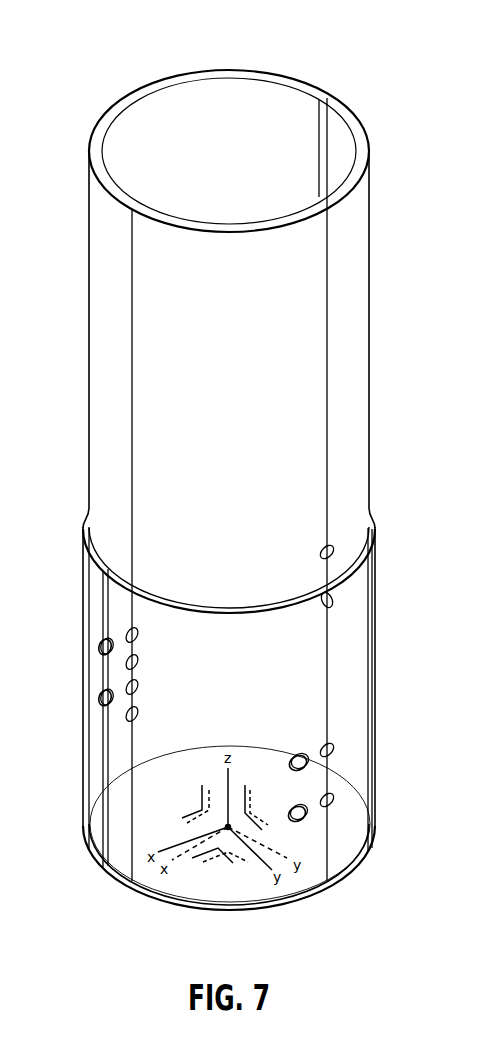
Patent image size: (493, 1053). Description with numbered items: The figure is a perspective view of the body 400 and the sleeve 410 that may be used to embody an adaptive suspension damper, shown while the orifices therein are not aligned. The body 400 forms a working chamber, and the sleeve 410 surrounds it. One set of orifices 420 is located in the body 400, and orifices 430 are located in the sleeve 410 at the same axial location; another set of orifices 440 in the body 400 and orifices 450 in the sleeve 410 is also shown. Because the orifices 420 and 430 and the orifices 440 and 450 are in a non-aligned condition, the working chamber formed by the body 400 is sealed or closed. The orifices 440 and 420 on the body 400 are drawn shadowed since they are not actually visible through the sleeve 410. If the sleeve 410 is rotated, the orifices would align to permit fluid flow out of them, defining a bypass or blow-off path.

The body 400 is at (270, 96).
The sleeve 410 is at (358, 601).
The orifices 420 is at (338, 746).
The orifices 430 is at (286, 762).
The orifices 440 is at (141, 662).
The orifices 450 is at (95, 645).